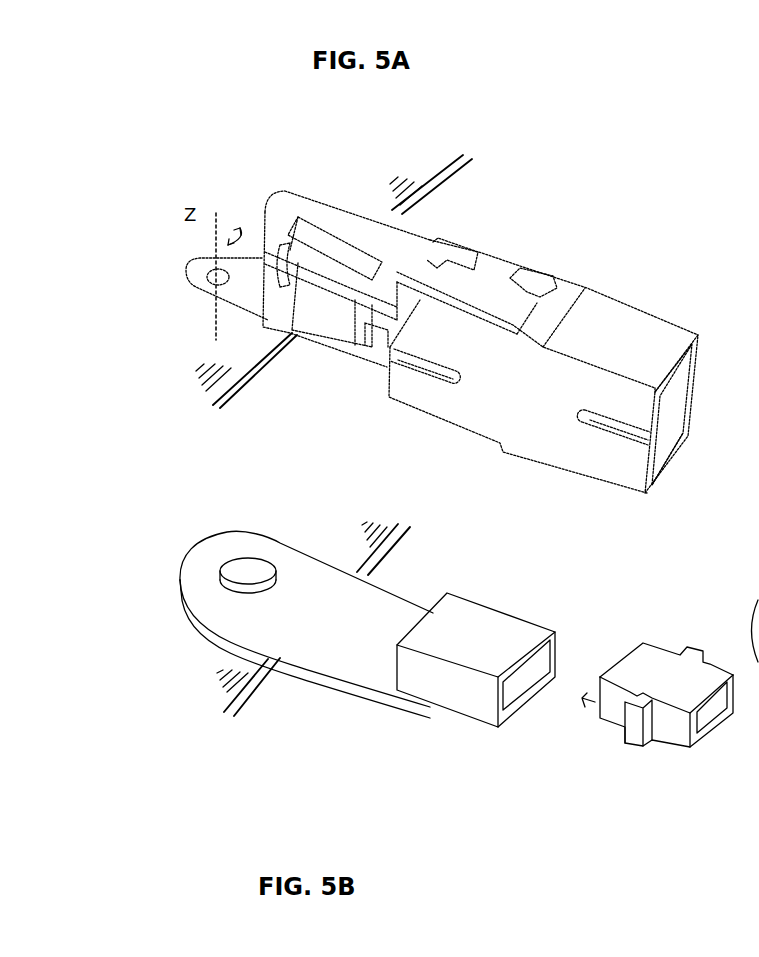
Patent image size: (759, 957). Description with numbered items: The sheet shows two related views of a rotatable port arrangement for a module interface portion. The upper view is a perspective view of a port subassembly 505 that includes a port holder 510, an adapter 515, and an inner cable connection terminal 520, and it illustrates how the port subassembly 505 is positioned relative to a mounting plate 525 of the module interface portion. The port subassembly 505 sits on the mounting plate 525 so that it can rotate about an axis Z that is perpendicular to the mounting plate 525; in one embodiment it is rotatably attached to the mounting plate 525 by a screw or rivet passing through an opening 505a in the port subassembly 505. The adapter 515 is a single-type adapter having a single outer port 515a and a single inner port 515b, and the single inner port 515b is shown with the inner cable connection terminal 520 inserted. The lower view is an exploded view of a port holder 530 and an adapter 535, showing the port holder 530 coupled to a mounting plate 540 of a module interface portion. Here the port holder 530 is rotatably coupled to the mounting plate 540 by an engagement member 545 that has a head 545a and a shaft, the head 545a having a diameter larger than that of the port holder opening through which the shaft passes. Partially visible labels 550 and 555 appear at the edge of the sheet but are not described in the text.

In FIG. 5A, the port subassembly 505 is at (543, 336).
In FIG. 5A, the opening 505a is at (192, 276).
In FIG. 5A, the port holder 510 is at (243, 273).
In FIG. 5A, the adapter 515 is at (628, 330).
In FIG. 5A, the single outer port 515a is at (587, 450).
In FIG. 5A, the single inner port 515b is at (460, 402).
In FIG. 5A, the inner cable connection terminal 520 is at (320, 327).
In FIG. 5A, the mounting plate 525 is at (247, 347).
In FIG. 5B, the port holder 530 is at (212, 542).
In FIG. 5B, the adapter 535 is at (650, 663).
In FIG. 5B, the mounting plate 540 is at (253, 670).
In FIG. 5B, the engagement member 545 is at (250, 575).
In FIG. 5B, the head 545a is at (268, 575).
In FIG. 5B, the connector element 550 is at (747, 605).
In FIG. 5B, the connector element 555 is at (747, 765).